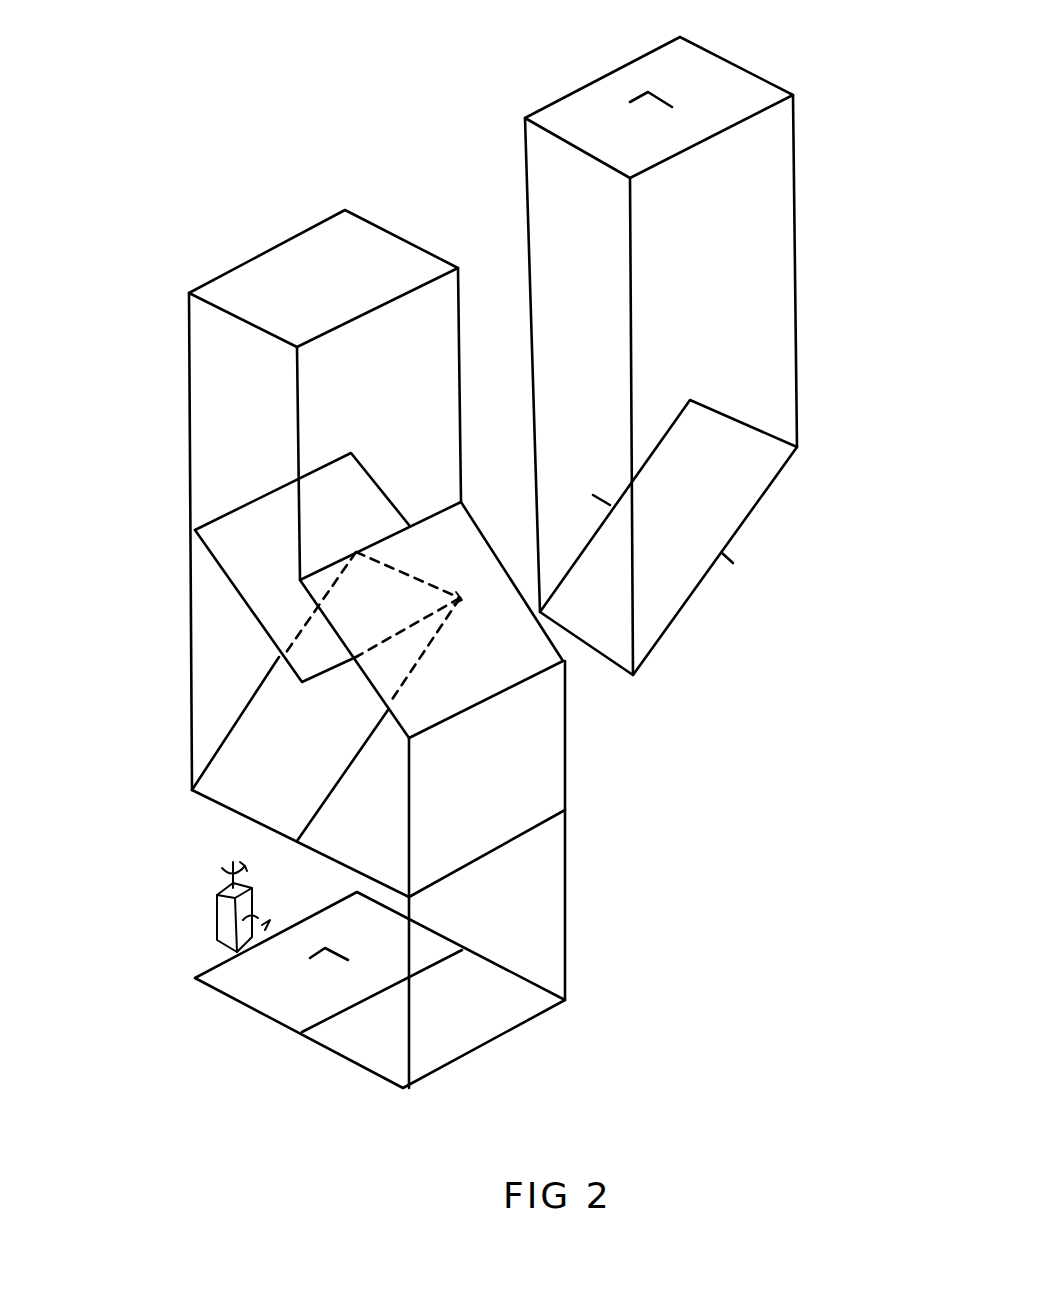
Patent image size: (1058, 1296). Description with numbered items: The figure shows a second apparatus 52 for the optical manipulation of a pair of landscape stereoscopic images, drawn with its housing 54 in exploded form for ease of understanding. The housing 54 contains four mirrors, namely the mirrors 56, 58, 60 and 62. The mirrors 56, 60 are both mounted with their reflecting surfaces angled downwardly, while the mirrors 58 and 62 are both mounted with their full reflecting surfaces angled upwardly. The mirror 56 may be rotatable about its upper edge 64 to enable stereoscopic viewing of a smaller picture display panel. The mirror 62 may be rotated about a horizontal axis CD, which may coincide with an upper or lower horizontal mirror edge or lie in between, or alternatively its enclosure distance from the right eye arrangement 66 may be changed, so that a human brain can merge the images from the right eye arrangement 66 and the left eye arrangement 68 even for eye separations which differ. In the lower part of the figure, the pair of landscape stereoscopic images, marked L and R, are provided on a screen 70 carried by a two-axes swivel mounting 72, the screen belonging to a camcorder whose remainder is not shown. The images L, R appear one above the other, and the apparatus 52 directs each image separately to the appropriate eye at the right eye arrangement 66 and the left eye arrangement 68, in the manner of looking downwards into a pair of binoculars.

The second apparatus 52 is at (862, 70).
The housing 54 is at (278, 495).
The mirror 56 is at (364, 764).
The mirror 58 is at (223, 543).
The mirror 60 is at (255, 789).
The mirror 62 is at (694, 349).
The upper edge 64 is at (435, 510).
The right eye arrangement 66 is at (258, 270).
The left eye arrangement 68 is at (593, 107).
The screen 70 is at (541, 1023).
The two-axes swivel mounting 72 is at (217, 922).